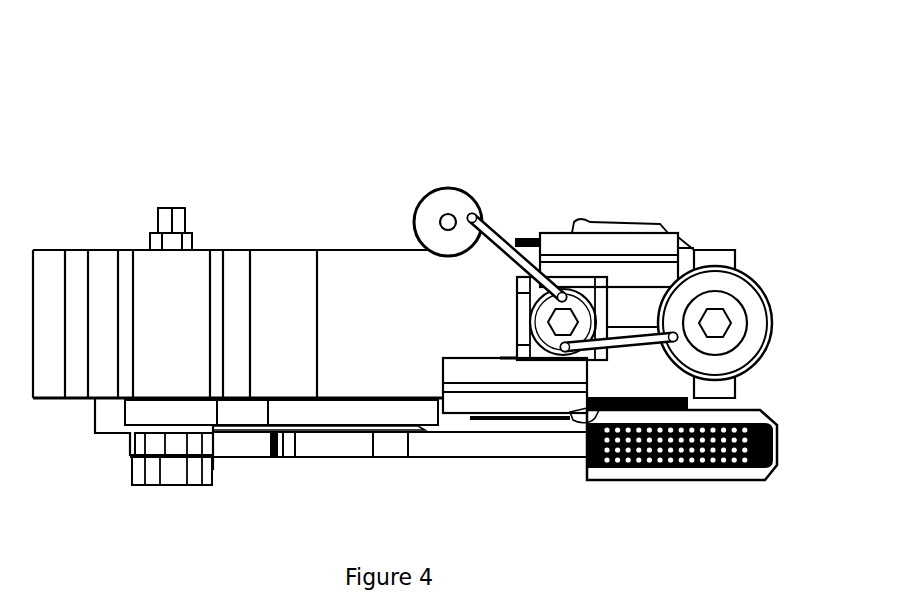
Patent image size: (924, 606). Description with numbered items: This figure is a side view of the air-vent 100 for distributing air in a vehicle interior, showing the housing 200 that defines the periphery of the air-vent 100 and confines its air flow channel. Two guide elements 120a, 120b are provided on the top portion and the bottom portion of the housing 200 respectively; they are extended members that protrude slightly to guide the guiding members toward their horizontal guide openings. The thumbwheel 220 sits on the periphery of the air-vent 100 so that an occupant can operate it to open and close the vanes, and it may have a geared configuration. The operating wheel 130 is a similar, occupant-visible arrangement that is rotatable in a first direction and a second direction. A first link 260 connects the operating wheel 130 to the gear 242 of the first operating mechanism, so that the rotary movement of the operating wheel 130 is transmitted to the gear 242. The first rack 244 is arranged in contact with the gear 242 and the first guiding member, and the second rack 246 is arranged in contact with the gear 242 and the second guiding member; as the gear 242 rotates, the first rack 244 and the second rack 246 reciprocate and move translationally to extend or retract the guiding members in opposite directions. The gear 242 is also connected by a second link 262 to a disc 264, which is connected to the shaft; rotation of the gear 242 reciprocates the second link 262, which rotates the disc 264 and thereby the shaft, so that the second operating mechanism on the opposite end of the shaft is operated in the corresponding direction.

The air-vent 100 is at (631, 71).
The housing 200 is at (330, 250).
The disc 264 is at (445, 188).
The second link 262 is at (510, 237).
The guide element 120a is at (606, 224).
The first rack 244 is at (678, 262).
The operating wheel 130 is at (768, 290).
The gear 242 is at (517, 303).
The first link 260 is at (623, 350).
The second rack 246 is at (480, 357).
The guide element 120b is at (577, 418).
The thumbwheel 220 is at (777, 450).